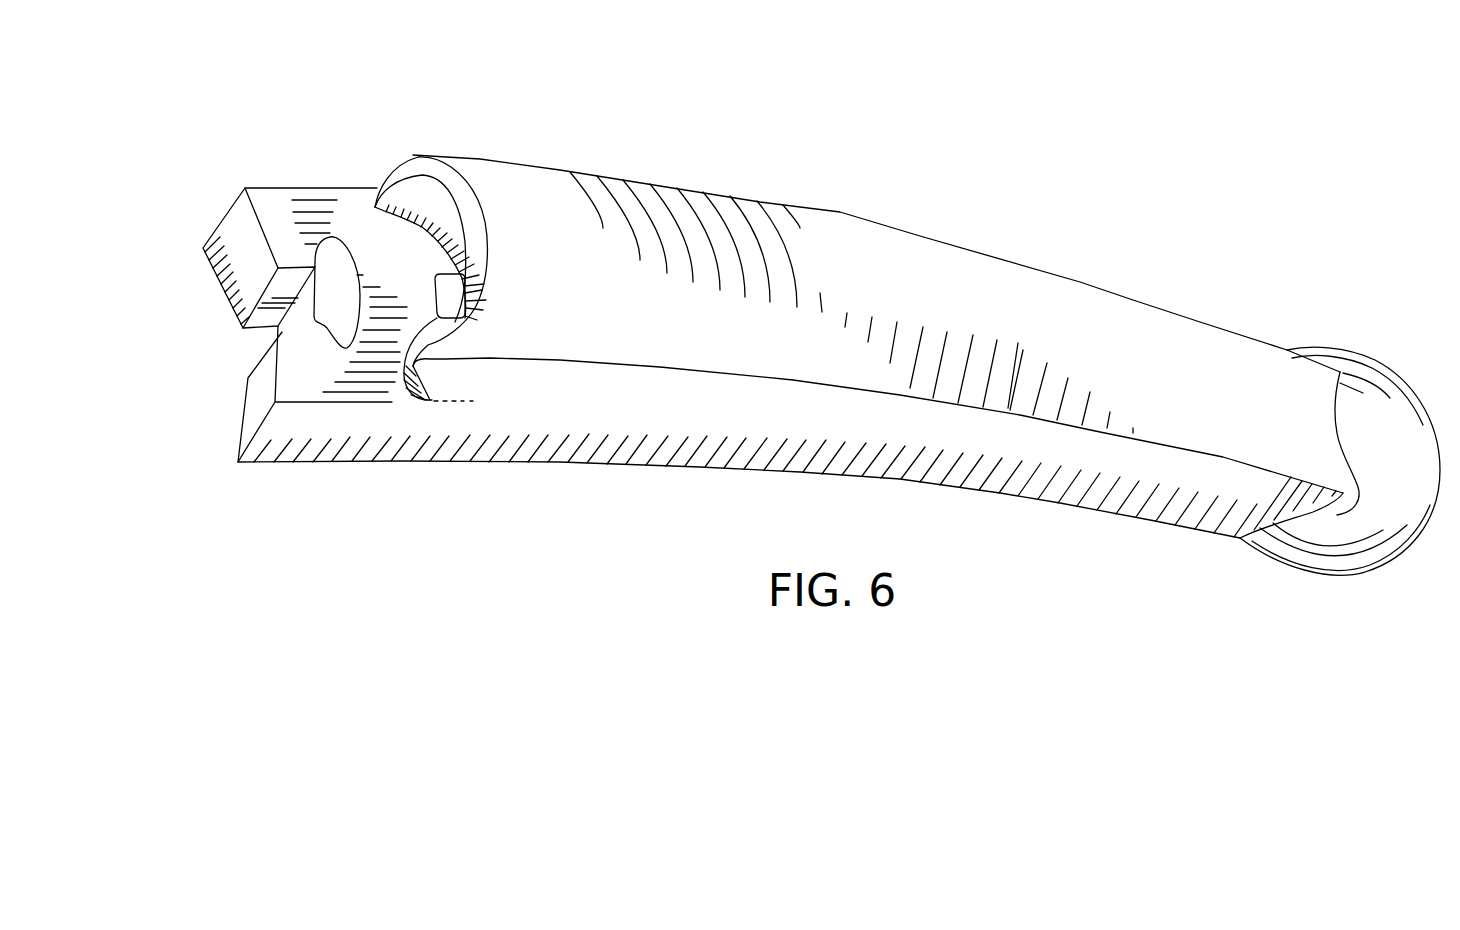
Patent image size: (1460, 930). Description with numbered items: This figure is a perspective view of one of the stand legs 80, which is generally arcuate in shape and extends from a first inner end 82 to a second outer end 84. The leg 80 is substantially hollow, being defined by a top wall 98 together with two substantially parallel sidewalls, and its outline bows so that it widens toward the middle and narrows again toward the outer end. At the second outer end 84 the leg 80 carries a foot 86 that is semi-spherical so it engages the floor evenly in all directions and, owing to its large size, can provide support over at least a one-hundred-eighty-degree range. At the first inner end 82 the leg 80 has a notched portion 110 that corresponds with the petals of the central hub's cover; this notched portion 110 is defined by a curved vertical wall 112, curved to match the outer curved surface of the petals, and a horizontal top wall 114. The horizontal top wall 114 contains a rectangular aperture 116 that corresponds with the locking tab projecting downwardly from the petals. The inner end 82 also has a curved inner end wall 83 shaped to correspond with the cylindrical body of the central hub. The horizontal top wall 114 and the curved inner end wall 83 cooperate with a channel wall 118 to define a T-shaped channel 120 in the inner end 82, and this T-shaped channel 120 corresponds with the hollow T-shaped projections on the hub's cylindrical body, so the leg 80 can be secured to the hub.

The leg 80 is at (1002, 682).
The first inner end 82 is at (538, 327).
The curved inner end wall 83 is at (247, 285).
The second outer end 84 is at (1217, 417).
The foot 86 is at (1385, 500).
The top wall 98 is at (946, 262).
The notched portion 110 is at (314, 167).
The curved vertical wall 112 is at (408, 195).
The horizontal top wall 114 is at (273, 210).
The rectangular aperture 116 is at (436, 316).
The channel wall 118 is at (333, 290).
The T-shaped channel 120 is at (318, 330).